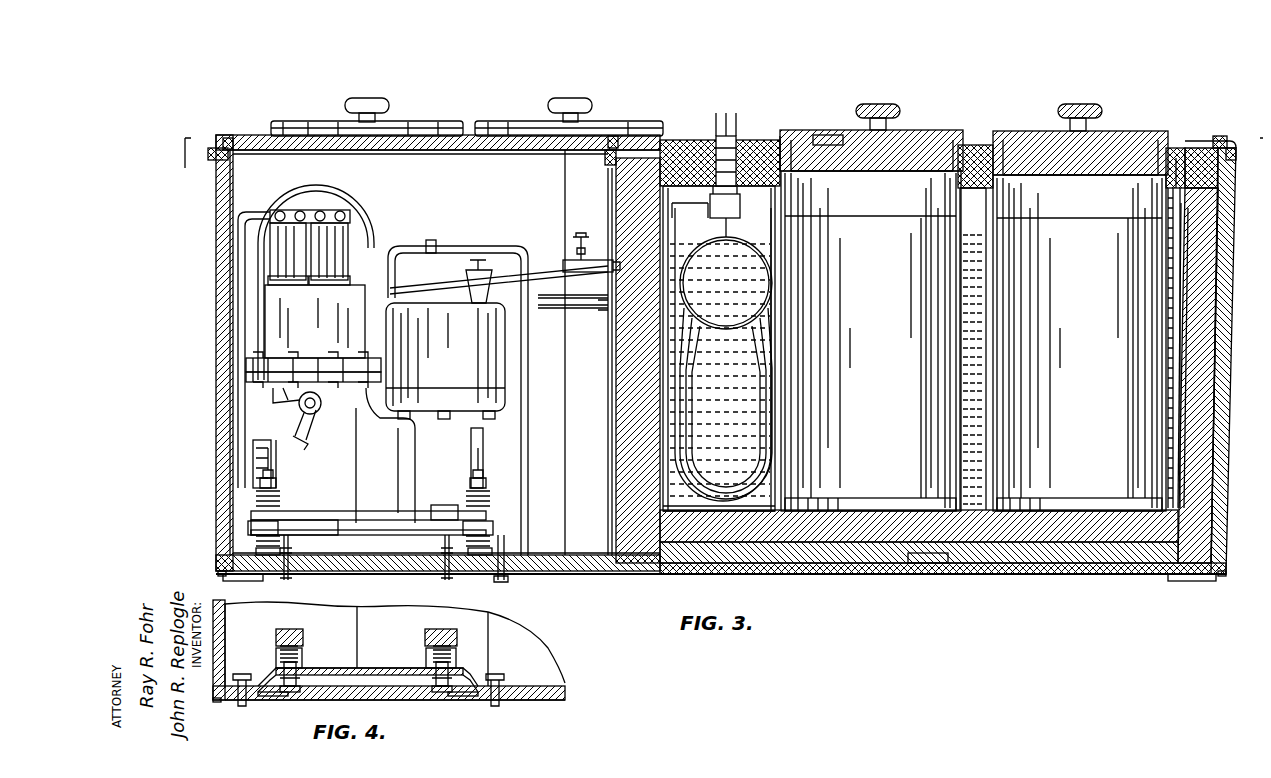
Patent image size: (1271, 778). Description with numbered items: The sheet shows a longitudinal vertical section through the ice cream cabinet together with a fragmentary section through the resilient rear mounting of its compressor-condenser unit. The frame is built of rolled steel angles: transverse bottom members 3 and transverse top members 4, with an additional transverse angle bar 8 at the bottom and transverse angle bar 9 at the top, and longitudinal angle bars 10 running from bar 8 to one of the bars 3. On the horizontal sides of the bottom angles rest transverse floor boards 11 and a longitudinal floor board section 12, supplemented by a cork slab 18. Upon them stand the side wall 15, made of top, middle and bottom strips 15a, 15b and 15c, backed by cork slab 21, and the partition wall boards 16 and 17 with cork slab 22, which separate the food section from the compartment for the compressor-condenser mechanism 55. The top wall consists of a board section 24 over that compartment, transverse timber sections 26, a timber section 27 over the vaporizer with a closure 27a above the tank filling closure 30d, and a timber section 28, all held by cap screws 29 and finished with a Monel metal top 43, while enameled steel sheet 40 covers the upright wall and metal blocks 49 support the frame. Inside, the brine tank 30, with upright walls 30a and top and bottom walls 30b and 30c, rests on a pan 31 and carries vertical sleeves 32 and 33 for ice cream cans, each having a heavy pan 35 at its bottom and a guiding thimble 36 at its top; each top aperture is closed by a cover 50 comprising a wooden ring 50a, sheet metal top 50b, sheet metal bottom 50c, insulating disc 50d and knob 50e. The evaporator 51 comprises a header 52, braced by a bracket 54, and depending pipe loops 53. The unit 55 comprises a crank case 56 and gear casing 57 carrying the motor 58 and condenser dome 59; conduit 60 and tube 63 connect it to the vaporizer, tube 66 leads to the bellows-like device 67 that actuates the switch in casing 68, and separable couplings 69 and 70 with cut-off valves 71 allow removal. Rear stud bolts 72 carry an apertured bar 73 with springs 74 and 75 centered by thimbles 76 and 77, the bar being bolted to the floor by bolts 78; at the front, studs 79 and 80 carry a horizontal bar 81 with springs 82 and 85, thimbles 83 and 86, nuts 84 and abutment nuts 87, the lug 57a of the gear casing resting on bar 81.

In FIG. 3, the transverse bottom member 3 is at (218, 568).
In FIG. 4, the transverse bottom member 3 is at (207, 692).
In FIG. 3, the transverse top member 4 is at (205, 152).
In FIG. 3, the transverse angle bar 8 is at (605, 565).
In FIG. 3, the transverse angle bar 9 is at (718, 163).
In FIG. 4, the angle bar 10 is at (557, 675).
In FIG. 3, the transverse floor board 11 is at (825, 566).
In FIG. 3, the longitudinal floor board section 12 is at (402, 566).
In FIG. 4, the longitudinal floor board section 12 is at (515, 692).
In FIG. 3, the side wall 15 is at (208, 392).
In FIG. 3, the top wall board strip 15a is at (208, 470).
In FIG. 4, the top wall board strip 15a is at (218, 618).
In FIG. 3, the middle wall board strip 15b is at (1240, 463).
In FIG. 3, the bottom wall board strip 15c is at (1240, 220).
In FIG. 3, the partition wall board 16 is at (604, 425).
In FIG. 3, the partition wall board 17 is at (242, 165).
In FIG. 4, the partition wall board 17 is at (370, 598).
In FIG. 3, the cork slab 18 is at (930, 556).
In FIG. 3, the cork slab 21 is at (1205, 395).
In FIG. 3, the cork slab 22 is at (608, 370).
In FIG. 3, the board section 24 is at (480, 160).
In FIG. 3, the transverse timber section 26 is at (765, 132).
In FIG. 3, the transverse timber section 27 is at (702, 130).
In FIG. 3, the closure 27a is at (724, 130).
In FIG. 3, the timber section 28 is at (1190, 140).
In FIG. 3, the cap screw 29 is at (218, 130).
In FIG. 3, the sheet metal tank 30 is at (1190, 272).
In FIG. 3, the upright tank wall 30a is at (1238, 285).
In FIG. 3, the tank top wall 30b is at (960, 190).
In FIG. 3, the tank bottom wall 30c is at (740, 510).
In FIG. 3, the filling aperture closure 30d is at (721, 204).
In FIG. 3, the sheet metal pan 31 is at (715, 510).
In FIG. 3, the vertical sleeve 32 is at (945, 378).
In FIG. 3, the vertical sleeve 33 is at (1150, 392).
In FIG. 3, the sheet-metal pan 35 is at (825, 495).
In FIG. 3, the thimble 36 is at (810, 212).
In FIG. 3, the enameled steel sheet 40 is at (208, 300).
In FIG. 4, the enameled steel sheet 40 is at (217, 632).
In FIG. 3, the Monel metal top sheet 43 is at (295, 128).
In FIG. 3, the metal block 49 is at (258, 574).
In FIG. 3, the cover 50 is at (432, 118).
In FIG. 3, the wooden ring 50a is at (790, 125).
In FIG. 3, the sheet metal top 50b is at (488, 118).
In FIG. 3, the sheet metal bottom 50c is at (820, 163).
In FIG. 3, the heat-insulating disc 50d is at (880, 122).
In FIG. 3, the handle or knob 50e is at (560, 90).
In FIG. 3, the evaporator 51 is at (716, 325).
In FIG. 3, the header 52 is at (762, 262).
In FIG. 3, the pipe loop 53 is at (766, 360).
In FIG. 3, the bracket 54 is at (690, 200).
In FIG. 3, the compressor-condenser mechanism 55 is at (400, 238).
In FIG. 3, the crank case 56 is at (240, 364).
In FIG. 4, the crank case 56 is at (280, 622).
In FIG. 3, the gear casing 57 is at (403, 455).
In FIG. 4, the gear casing 57 is at (425, 640).
In FIG. 3, the bracket or lug 57a is at (425, 498).
In FIG. 3, the motor 58 is at (445, 361).
In FIG. 3, the condenser dome 59 is at (318, 182).
In FIG. 3, the conduit 60 is at (292, 425).
In FIG. 3, the tube 63 is at (535, 255).
In FIG. 3, the tube 66 is at (290, 202).
In FIG. 3, the bellows-like device 67 is at (335, 238).
In FIG. 3, the switch casing 68 is at (315, 321).
In FIG. 3, the separable coupling 69 is at (565, 288).
In FIG. 3, the separable coupling 70 is at (585, 252).
In FIG. 3, the manual cut-off valve 71 is at (572, 225).
In FIG. 3, the stud bolt 72 is at (280, 572).
In FIG. 4, the stud bolt 72 is at (295, 625).
In FIG. 4, the apertured bar 73 is at (362, 660).
In FIG. 4, the coiled spring 74 is at (272, 652).
In FIG. 4, the spring 75 is at (258, 692).
In FIG. 4, the thimble 76 is at (292, 642).
In FIG. 4, the thimble 77 is at (286, 692).
In FIG. 3, the bolt 78 is at (498, 572).
In FIG. 4, the bolt 78 is at (232, 698).
In FIG. 3, the upright stud 79 is at (264, 450).
In FIG. 3, the upright stud 80 is at (462, 455).
In FIG. 3, the horizontal bar 81 is at (318, 505).
In FIG. 3, the spring 82 is at (240, 518).
In FIG. 3, the centering thimble 83 is at (243, 525).
In FIG. 3, the nut 84 is at (248, 542).
In FIG. 3, the spring 85 is at (248, 490).
In FIG. 3, the centering thimble 86 is at (268, 476).
In FIG. 3, the abutment nut 87 is at (268, 466).